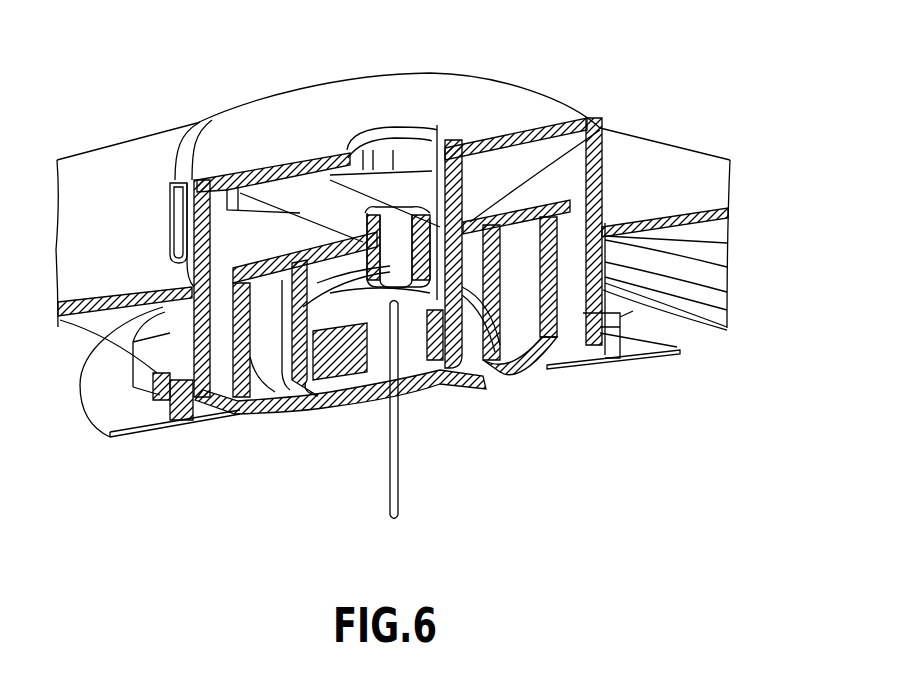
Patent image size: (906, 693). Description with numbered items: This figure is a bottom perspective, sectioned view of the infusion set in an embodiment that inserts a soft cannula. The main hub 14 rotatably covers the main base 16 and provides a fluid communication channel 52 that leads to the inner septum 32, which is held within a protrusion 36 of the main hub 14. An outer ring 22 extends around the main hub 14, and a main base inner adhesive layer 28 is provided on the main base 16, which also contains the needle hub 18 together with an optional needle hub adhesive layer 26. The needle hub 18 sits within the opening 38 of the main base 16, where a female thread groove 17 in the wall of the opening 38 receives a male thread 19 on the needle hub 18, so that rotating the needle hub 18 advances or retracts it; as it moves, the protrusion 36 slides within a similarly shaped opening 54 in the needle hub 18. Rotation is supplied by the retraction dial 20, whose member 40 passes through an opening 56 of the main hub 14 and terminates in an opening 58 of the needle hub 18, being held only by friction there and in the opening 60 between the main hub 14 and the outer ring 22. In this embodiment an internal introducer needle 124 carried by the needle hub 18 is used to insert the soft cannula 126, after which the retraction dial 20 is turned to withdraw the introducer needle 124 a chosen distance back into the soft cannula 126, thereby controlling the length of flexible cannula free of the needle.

The main hub 14 is at (605, 122).
The main base 16 is at (527, 300).
The female thread groove 17 is at (207, 223).
The needle hub 18 is at (313, 380).
The male thread 19 is at (320, 350).
The retraction dial 20 is at (495, 98).
The outer ring 22 is at (717, 187).
The needle hub adhesive layer 26 is at (417, 400).
The main base inner adhesive layer 28 is at (667, 350).
The inner septum 32 is at (487, 300).
The protrusion 36 is at (327, 252).
The opening 38 is at (377, 257).
The member 40 is at (447, 168).
The fluid communication channel 52 is at (386, 216).
The opening 54 is at (372, 360).
The opening 56 is at (463, 217).
The opening 58 is at (462, 275).
The opening 60 is at (728, 264).
The internal introducer needle 124 is at (401, 457).
The soft cannula 126 is at (401, 510).